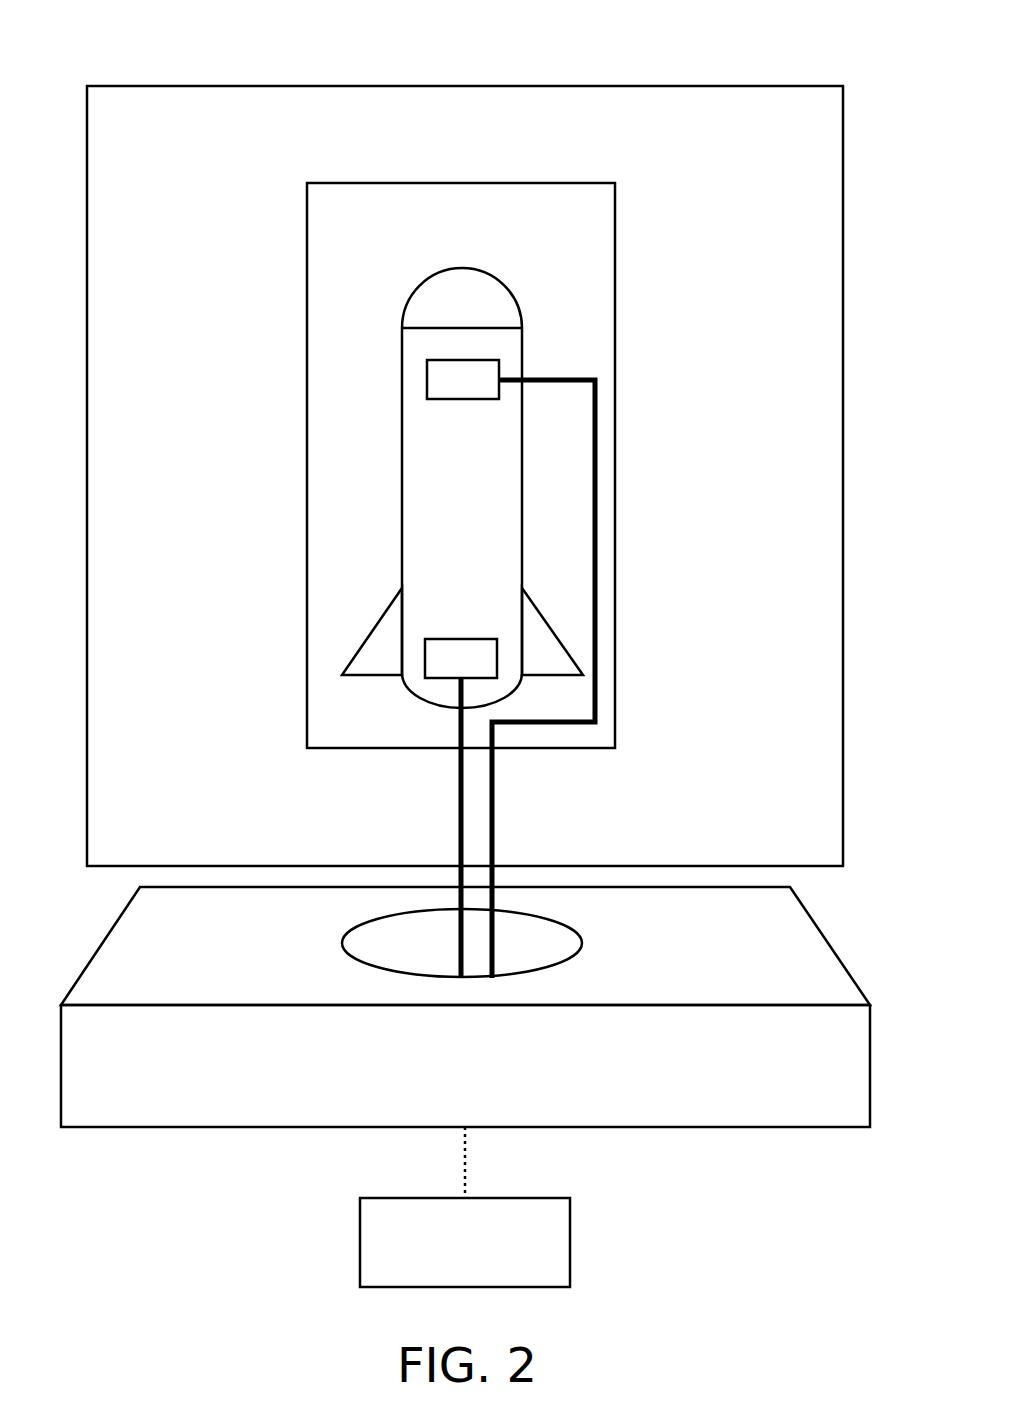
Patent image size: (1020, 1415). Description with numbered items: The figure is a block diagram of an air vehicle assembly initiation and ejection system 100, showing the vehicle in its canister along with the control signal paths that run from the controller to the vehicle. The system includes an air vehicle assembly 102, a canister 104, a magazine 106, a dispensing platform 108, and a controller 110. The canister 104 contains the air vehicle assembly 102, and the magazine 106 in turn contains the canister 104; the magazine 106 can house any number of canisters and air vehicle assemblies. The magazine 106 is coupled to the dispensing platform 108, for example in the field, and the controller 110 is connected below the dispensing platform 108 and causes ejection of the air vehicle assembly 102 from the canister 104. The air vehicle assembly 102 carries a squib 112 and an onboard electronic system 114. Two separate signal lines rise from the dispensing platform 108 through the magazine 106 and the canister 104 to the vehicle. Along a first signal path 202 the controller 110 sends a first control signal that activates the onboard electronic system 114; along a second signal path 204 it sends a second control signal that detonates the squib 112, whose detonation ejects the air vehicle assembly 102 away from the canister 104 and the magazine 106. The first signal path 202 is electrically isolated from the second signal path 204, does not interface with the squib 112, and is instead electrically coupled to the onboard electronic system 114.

The air vehicle assembly initiation and ejection system 100 is at (840, 47).
The air vehicle assembly 102 is at (442, 544).
The canister 104 is at (442, 236).
The magazine 106 is at (443, 147).
The dispensing platform 108 is at (445, 1094).
The controller 110 is at (445, 1271).
The squib 112 is at (441, 673).
The onboard electronic system 114 is at (443, 394).
The first signal path 202 is at (492, 825).
The second signal path 204 is at (461, 828).